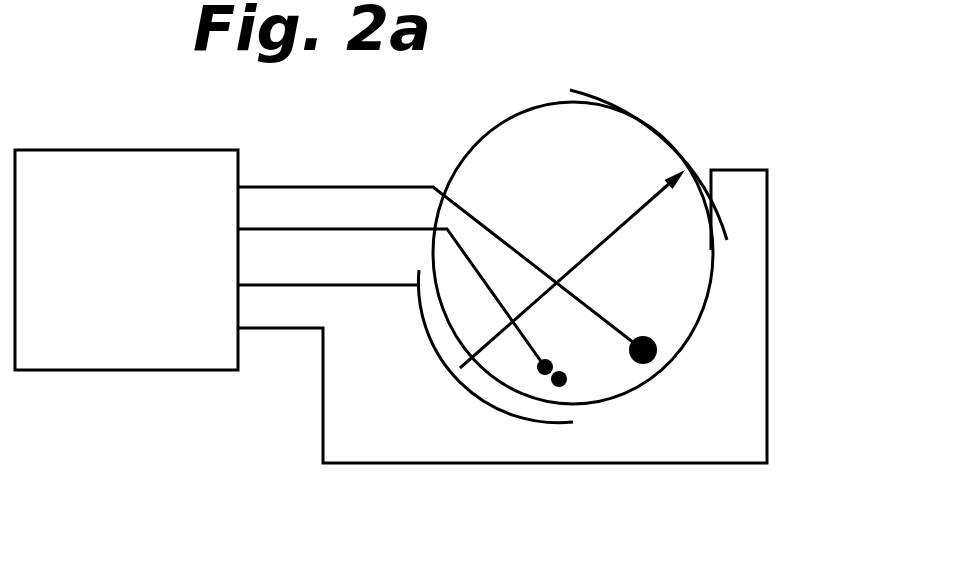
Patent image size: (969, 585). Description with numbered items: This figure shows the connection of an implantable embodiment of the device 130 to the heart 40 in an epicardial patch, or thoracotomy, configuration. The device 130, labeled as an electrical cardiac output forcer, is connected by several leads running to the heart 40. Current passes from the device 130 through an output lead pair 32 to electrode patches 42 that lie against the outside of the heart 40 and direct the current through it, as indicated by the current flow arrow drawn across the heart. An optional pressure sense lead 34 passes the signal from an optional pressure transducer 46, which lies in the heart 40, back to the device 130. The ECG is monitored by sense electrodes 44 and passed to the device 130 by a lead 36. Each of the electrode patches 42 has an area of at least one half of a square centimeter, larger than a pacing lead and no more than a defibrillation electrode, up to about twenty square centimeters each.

The device 130 is at (98, 150).
The pressure sense lead 34 is at (267, 187).
The lead 36 is at (365, 229).
The output lead pair 32 is at (293, 285).
The heart 40 is at (517, 113).
The electrode patches 42 is at (627, 102).
The sense electrodes 44 is at (573, 380).
The pressure transducer 46 is at (657, 352).